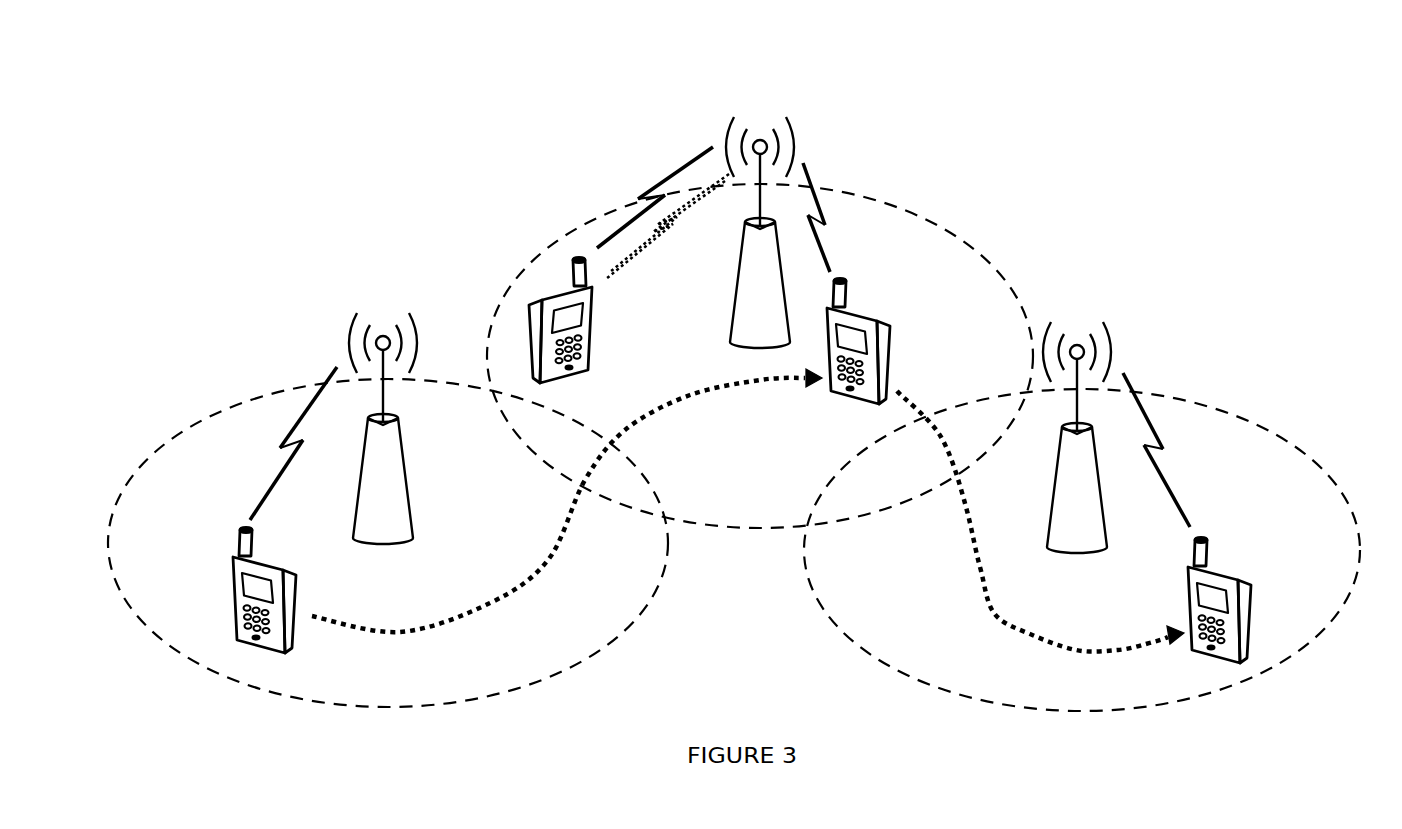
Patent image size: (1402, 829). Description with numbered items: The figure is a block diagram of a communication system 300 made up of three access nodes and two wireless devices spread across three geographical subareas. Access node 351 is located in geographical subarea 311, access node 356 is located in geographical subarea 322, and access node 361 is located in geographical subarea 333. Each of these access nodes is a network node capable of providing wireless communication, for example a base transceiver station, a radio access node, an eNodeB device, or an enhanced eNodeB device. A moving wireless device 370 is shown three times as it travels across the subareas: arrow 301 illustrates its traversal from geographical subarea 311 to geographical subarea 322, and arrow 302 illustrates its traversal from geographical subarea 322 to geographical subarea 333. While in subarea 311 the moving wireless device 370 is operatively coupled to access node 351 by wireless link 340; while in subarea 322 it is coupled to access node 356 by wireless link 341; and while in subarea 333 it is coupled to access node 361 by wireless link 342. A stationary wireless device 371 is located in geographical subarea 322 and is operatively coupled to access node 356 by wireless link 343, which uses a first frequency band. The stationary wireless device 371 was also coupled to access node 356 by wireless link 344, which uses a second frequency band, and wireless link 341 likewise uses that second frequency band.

The communication system 300 is at (218, 70).
The geographical subarea 311 is at (400, 687).
The geographical subarea 322 is at (773, 514).
The geographical subarea 333 is at (1016, 687).
The access node 351 is at (392, 542).
The access node 356 is at (748, 346).
The access node 361 is at (1092, 550).
The moving wireless device 370 is at (234, 580).
The stationary wireless device 371 is at (542, 294).
The wireless link 340 is at (278, 477).
The wireless link 341 is at (826, 250).
The wireless link 342 is at (1164, 474).
The wireless link 343 is at (668, 180).
The wireless link 344 is at (650, 246).
The arrow 301 is at (522, 592).
The arrow 302 is at (981, 589).